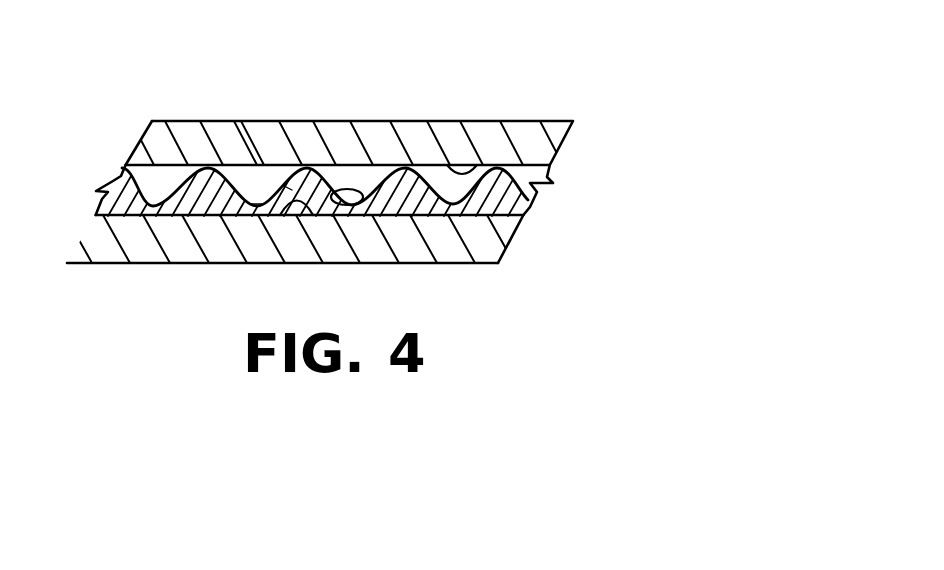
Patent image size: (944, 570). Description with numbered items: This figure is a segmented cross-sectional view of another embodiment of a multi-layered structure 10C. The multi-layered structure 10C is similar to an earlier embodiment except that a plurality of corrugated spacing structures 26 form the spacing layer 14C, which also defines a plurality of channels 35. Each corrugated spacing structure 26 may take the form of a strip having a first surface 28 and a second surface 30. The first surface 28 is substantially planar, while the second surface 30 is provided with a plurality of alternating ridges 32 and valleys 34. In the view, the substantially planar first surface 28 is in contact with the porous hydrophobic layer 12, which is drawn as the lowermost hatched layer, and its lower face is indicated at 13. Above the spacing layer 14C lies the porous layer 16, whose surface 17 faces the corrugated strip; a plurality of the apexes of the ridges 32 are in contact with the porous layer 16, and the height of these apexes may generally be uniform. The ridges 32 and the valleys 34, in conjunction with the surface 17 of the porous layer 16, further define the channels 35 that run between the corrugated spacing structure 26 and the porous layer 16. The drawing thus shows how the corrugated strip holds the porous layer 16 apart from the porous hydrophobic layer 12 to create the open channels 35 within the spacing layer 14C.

The multi-layered structure 10C is at (356, 164).
The porous hydrophobic layer 12 is at (306, 264).
The lower surface of base layer 13 is at (217, 215).
The spacing layer 14C is at (356, 176).
The porous layer 16 is at (423, 146).
The surface of the porous layer 17 is at (476, 169).
The corrugated spacing structure 26 is at (203, 188).
The first surface 28 is at (300, 198).
The second surface 30 is at (385, 198).
The ridges 32 is at (284, 186).
The valleys 34 is at (256, 170).
The channels 35 is at (355, 178).